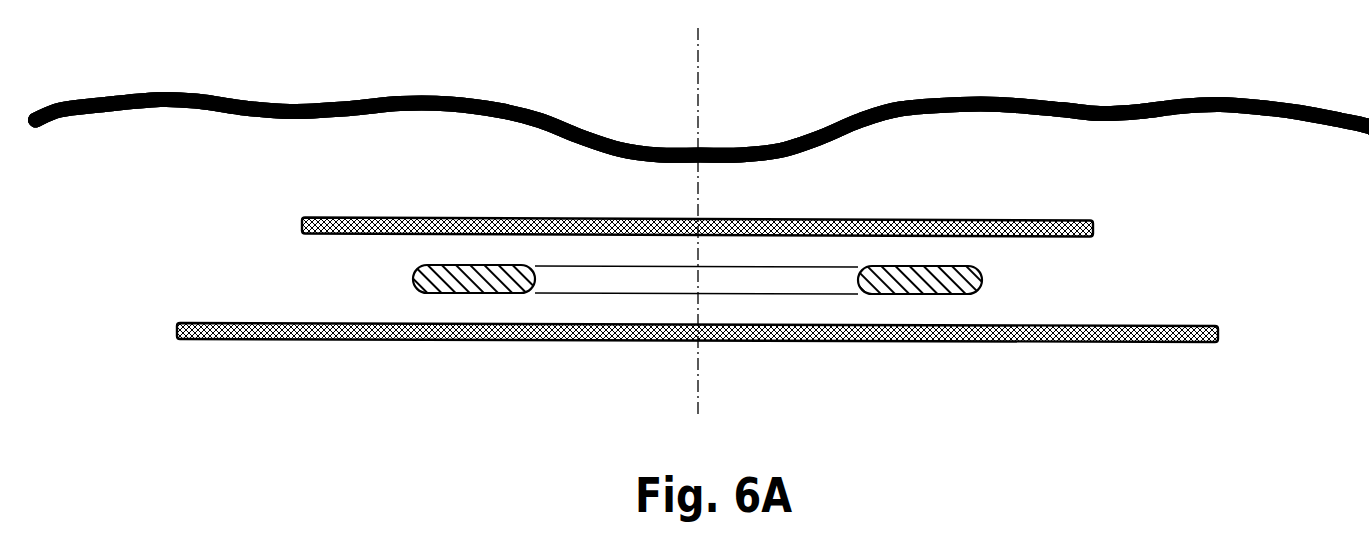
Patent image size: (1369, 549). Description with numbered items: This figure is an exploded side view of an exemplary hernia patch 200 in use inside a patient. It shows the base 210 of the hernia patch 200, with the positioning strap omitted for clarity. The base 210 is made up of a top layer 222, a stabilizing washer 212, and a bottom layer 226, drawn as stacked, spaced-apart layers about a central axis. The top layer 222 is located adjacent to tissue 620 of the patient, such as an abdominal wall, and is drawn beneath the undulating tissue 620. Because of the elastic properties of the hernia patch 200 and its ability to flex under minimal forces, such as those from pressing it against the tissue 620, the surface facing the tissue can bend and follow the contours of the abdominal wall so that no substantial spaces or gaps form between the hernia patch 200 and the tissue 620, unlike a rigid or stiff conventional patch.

The hernia patch 200 is at (702, 335).
The base 210 is at (702, 290).
The stabilizing washer 212 is at (982, 281).
The top layer 222 is at (1093, 228).
The bottom layer 226 is at (1218, 336).
The tissue 620 is at (990, 113).